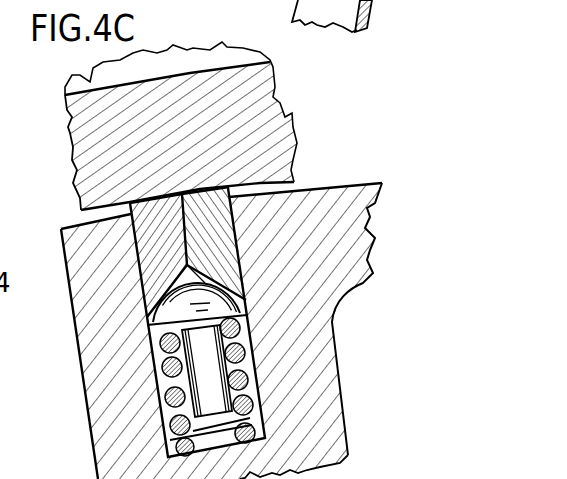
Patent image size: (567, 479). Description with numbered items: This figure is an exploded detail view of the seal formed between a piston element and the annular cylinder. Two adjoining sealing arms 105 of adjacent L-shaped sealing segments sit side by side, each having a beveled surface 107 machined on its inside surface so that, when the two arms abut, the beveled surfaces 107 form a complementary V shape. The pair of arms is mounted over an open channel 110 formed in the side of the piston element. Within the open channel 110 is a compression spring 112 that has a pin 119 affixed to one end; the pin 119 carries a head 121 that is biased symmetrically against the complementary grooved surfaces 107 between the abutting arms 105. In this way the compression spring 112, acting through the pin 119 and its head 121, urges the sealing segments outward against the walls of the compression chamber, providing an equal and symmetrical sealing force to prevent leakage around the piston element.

The longer arm 105 is at (145, 242).
The beveled surface 107 is at (147, 323).
The open channel 110 is at (147, 357).
The compression spring 112 is at (265, 440).
The pin 119 is at (208, 377).
The head 121 is at (240, 352).